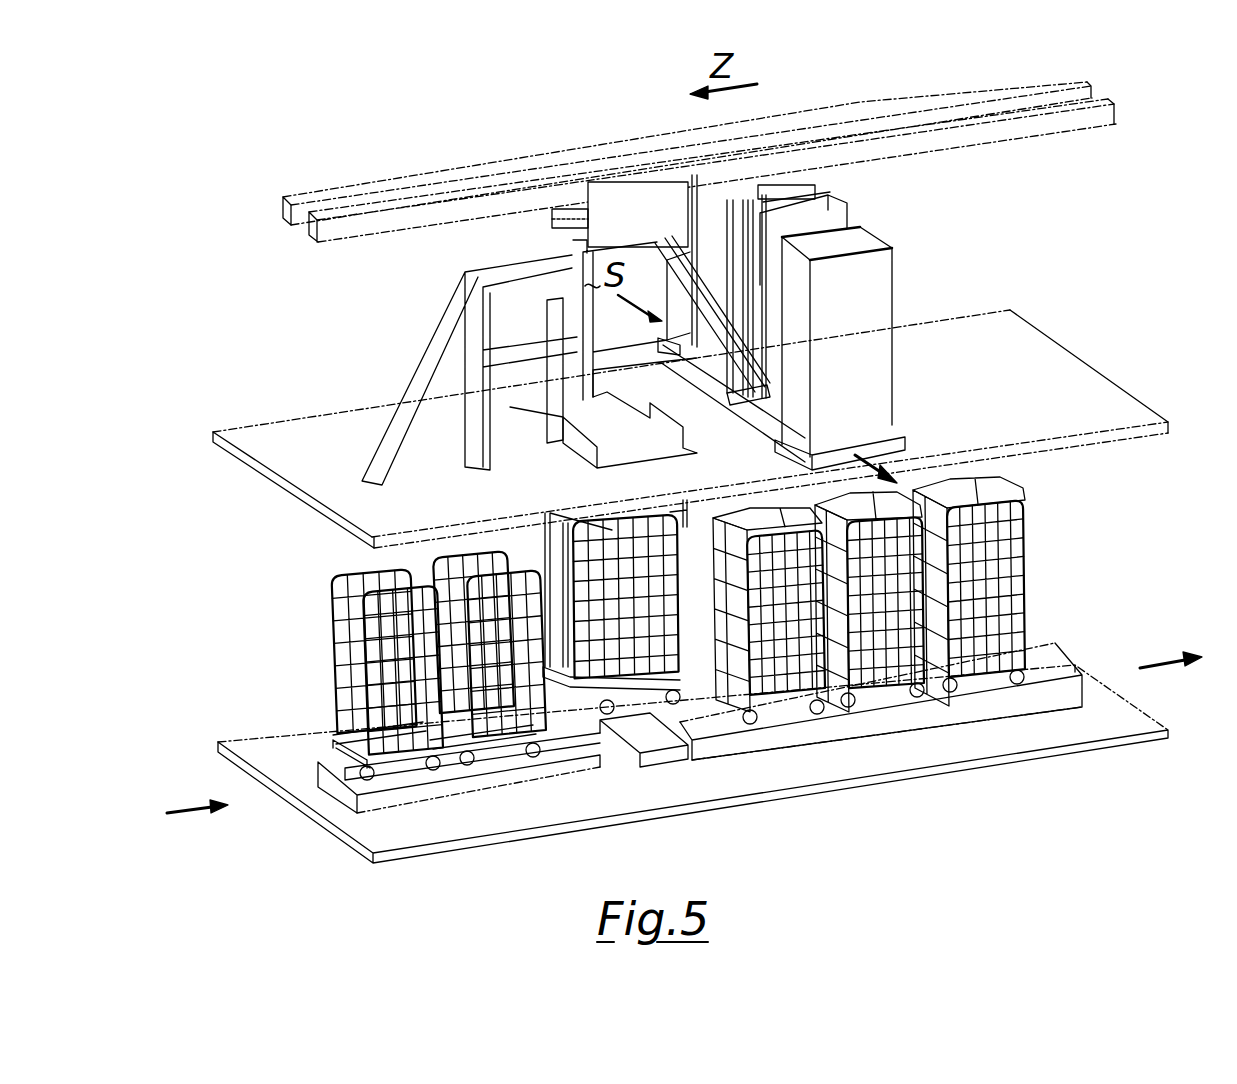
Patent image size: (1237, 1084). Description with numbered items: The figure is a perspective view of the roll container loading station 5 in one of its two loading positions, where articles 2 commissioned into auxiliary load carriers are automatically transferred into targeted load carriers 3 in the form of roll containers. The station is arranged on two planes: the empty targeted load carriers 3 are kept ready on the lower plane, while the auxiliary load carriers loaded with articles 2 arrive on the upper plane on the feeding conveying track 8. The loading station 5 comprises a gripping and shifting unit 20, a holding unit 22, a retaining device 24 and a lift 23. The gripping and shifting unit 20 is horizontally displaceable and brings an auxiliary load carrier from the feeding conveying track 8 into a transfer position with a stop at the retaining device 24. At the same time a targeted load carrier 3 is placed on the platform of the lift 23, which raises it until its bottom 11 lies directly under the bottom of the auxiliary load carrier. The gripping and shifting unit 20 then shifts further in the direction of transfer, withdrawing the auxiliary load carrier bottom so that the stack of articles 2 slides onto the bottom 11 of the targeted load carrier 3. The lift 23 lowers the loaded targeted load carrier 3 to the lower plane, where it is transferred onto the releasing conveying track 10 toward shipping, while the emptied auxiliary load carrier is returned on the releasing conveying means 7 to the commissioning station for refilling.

The articles 2 is at (810, 203).
The targeted load carrier 3 is at (1017, 518).
The loading station 5 is at (1146, 262).
The releasing conveying means 7 is at (893, 447).
The feeding conveying track 8 is at (660, 350).
The releasing conveying track 10 is at (1067, 663).
The bottom of the targeted load carrier 11 is at (340, 741).
The gripping and shifting unit 20 is at (738, 202).
The holding unit 22 is at (628, 193).
The lift 23 is at (628, 722).
The retaining device 24 is at (440, 340).